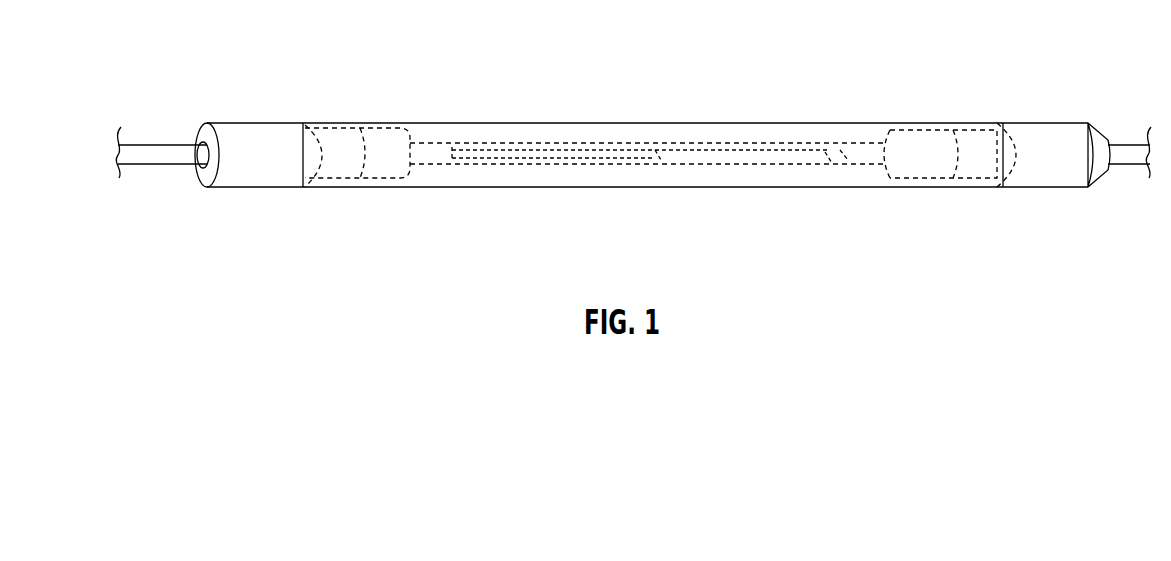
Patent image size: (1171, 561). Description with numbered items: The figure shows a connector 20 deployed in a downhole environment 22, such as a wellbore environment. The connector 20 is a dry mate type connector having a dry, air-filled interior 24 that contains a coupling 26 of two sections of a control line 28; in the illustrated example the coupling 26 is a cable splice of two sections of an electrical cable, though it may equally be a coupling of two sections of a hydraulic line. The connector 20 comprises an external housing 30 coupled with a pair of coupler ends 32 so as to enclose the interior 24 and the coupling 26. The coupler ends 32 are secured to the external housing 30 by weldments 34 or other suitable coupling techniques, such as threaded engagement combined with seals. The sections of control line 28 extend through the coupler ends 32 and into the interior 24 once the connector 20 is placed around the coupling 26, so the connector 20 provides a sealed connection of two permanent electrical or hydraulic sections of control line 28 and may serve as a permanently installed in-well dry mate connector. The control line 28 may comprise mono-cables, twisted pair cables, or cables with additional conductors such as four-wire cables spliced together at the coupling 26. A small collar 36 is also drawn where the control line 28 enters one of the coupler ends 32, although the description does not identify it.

The connector 20 is at (1084, 101).
The downhole environment 22 is at (466, 258).
The interior 24 is at (840, 126).
The coupling 26 is at (658, 142).
The control line 28 is at (135, 173).
The external housing 30 is at (734, 194).
The coupler ends 32 is at (262, 197).
The weldments 34 is at (313, 136).
The collar 36 is at (199, 168).